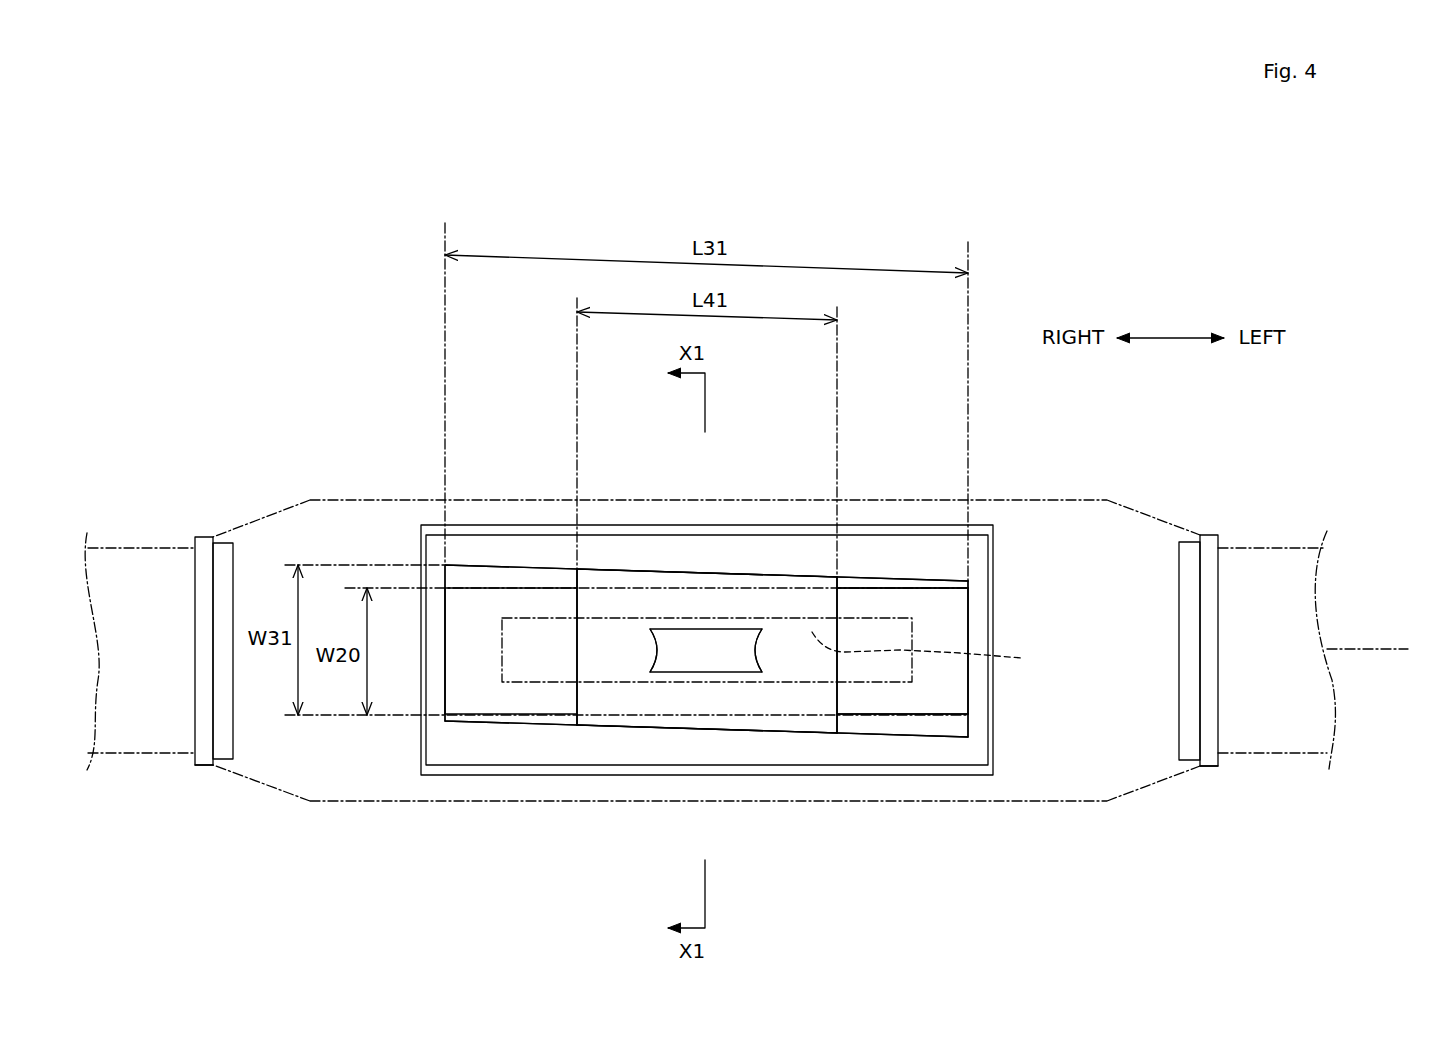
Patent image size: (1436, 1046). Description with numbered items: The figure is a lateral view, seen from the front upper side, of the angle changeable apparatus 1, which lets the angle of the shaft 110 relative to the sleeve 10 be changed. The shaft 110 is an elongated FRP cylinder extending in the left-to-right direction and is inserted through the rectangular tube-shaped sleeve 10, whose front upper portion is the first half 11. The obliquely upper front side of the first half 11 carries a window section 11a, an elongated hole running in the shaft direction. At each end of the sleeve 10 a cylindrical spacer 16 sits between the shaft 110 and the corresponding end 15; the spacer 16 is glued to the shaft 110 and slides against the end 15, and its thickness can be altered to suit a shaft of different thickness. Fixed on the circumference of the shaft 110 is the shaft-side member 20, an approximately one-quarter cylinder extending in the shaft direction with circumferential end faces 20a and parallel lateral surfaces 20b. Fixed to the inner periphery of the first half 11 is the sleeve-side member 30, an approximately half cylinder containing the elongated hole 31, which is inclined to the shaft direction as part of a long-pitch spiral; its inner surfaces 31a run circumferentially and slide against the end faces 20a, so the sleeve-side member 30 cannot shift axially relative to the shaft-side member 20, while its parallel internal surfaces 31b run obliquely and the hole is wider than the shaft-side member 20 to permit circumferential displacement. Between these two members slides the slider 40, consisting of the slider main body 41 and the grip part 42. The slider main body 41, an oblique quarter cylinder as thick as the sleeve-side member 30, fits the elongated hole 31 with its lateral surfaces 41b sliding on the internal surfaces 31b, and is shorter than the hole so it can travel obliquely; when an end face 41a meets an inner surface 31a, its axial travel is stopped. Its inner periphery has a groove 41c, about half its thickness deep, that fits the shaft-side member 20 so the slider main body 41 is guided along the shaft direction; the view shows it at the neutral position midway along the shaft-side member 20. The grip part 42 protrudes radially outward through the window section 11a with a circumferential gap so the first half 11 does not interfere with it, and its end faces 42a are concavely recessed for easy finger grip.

The angle changeable apparatus 1 is at (749, 172).
The sleeve 10 is at (706, 607).
The first half 11 is at (345, 500).
The window section 11a is at (543, 620).
The shaft 110 is at (123, 548).
The end of sleeve 15 is at (245, 523).
The spacer 16 is at (208, 768).
The shaft-side member 20 is at (914, 716).
The end face of shaft-side member 20a is at (445, 682).
The circumferential lateral surface of shaft-side member 20b is at (897, 582).
The sleeve-side member 30 is at (498, 777).
The elongated hole 31 is at (960, 618).
The inner surface of elongated hole 31a is at (452, 698).
The circumferential internal surface of elongated hole 31b is at (726, 576).
The slider 40 is at (780, 571).
The slider main body 41 is at (620, 605).
The end face of slider main body 41a is at (838, 598).
The circumferential lateral surface of slider main body 41b is at (655, 572).
The groove 41c is at (938, 651).
The grip part 42 is at (720, 653).
The end face of grip part 42a is at (647, 648).